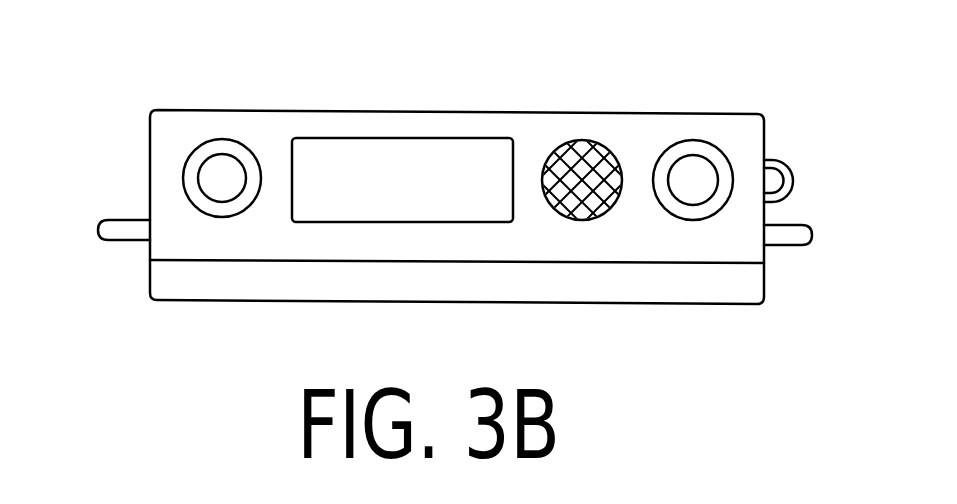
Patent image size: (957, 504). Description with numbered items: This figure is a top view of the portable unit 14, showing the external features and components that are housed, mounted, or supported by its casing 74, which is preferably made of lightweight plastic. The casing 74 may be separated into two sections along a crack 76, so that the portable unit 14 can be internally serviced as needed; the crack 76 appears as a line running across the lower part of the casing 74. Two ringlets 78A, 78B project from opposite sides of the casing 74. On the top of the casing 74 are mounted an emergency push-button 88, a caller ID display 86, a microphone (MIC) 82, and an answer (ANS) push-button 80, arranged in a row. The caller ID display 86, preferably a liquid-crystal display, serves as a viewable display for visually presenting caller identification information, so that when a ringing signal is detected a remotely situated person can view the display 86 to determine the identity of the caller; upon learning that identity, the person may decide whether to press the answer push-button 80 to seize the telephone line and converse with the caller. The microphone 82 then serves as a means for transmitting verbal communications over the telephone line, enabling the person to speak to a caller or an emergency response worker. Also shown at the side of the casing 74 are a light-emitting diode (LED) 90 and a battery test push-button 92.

The portable unit 14 is at (120, 85).
The casing 74 is at (487, 112).
The crack 76 is at (642, 263).
The ringlet 78A is at (98, 230).
The ringlet 78B is at (813, 234).
The answer (ANS) push-button 80 is at (694, 155).
The microphone (MIC) 82 is at (582, 140).
The caller ID display 86 is at (396, 138).
The emergency (or "911") push-button 88 is at (222, 154).
The light-emitting diode (LED) 90 is at (781, 160).
The battery test push-button 92 is at (793, 180).